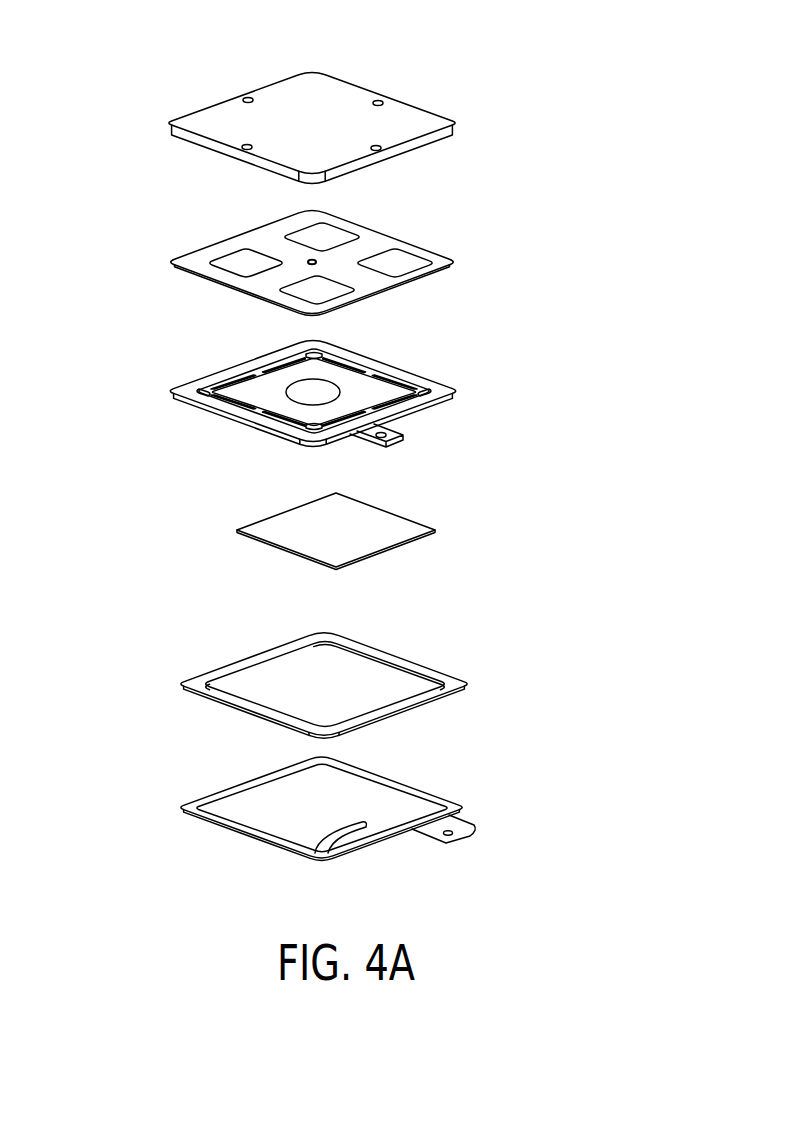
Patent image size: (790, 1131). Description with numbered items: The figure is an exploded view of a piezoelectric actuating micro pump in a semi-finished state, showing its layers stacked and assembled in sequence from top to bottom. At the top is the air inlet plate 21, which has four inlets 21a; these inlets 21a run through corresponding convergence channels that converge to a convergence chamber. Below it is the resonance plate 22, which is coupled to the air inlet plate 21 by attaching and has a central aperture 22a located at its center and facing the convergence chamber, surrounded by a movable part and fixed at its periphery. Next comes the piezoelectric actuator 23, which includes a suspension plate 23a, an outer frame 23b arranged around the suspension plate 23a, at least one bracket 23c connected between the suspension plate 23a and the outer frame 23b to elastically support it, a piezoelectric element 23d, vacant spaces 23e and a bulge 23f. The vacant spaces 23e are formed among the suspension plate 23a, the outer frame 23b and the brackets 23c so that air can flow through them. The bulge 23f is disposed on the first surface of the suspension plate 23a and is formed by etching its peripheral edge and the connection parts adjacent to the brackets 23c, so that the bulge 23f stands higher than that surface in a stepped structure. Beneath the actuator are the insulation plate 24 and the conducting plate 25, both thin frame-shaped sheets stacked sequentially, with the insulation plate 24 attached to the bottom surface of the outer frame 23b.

The air inlet plate 21 is at (337, 97).
The inlet 21a is at (247, 98).
The resonance plate 22 is at (344, 248).
The central aperture 22a is at (310, 260).
The piezoelectric actuator 23 is at (370, 407).
The suspension plate 23a is at (370, 392).
The outer frame 23b is at (413, 389).
The bracket 23c is at (459, 455).
The piezoelectric element 23d is at (380, 540).
The vacant space 23e is at (440, 393).
The bulge 23f is at (318, 391).
The insulation plate 24 is at (467, 664).
The conducting plate 25 is at (462, 795).